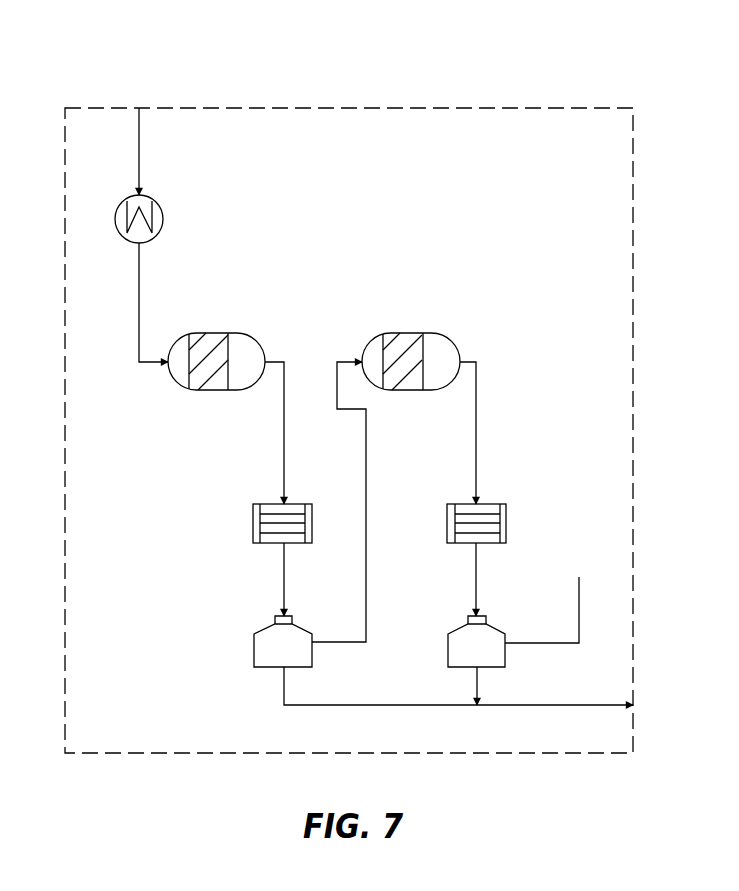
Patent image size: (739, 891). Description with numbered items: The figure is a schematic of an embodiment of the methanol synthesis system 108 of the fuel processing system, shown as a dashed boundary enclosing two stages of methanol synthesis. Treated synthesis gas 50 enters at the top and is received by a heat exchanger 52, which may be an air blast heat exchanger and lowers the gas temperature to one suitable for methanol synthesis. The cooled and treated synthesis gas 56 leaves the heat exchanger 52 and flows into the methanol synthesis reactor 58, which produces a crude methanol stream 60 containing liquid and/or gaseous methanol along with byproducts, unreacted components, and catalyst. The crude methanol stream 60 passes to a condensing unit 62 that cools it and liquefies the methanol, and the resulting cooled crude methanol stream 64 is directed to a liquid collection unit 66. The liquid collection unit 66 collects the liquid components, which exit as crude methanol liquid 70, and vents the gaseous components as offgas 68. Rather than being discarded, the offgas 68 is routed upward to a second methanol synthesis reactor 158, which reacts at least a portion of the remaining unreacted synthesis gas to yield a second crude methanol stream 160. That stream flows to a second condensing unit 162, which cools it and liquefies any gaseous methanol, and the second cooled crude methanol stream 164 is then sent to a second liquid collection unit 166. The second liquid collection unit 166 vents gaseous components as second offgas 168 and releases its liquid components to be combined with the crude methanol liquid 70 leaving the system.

The methanol synthesis system 108 is at (553, 108).
The treated synthesis gas 50 is at (151, 118).
The heat exchanger 52 is at (157, 205).
The cooled and treated synthesis gas 56 is at (151, 263).
The methanol synthesis reactor 58 is at (201, 390).
The crude methanol stream 60 is at (298, 398).
The condensing unit 62 is at (253, 520).
The cooled crude methanol stream 64 is at (272, 550).
The liquid collection unit 66 is at (254, 650).
The offgas 68 is at (378, 492).
The crude methanol liquid 70 is at (393, 717).
The second methanol synthesis reactor 158 is at (425, 333).
The second crude methanol stream 160 is at (492, 400).
The second condensing unit 162 is at (506, 508).
The second cooled crude methanol stream 164 is at (492, 548).
The second liquid collection unit 166 is at (466, 617).
The second offgas 168 is at (575, 654).